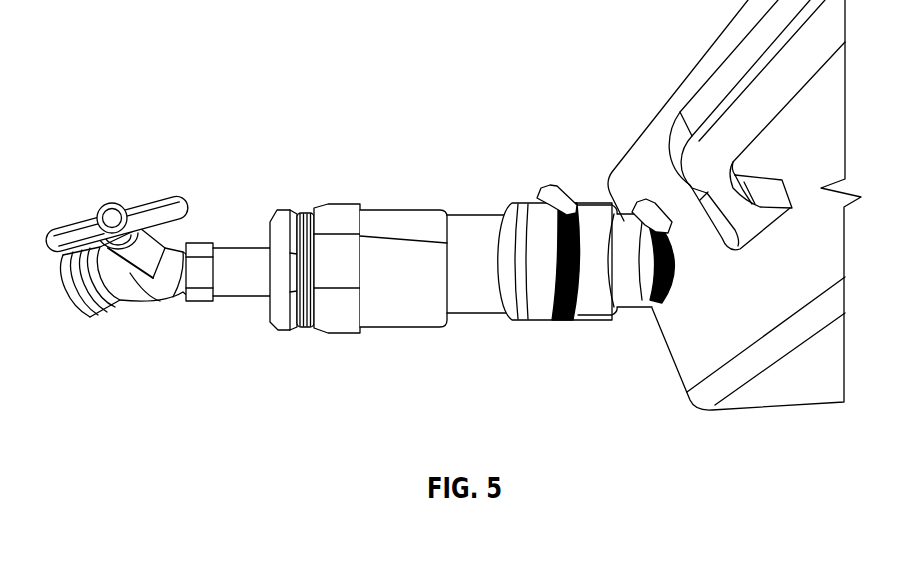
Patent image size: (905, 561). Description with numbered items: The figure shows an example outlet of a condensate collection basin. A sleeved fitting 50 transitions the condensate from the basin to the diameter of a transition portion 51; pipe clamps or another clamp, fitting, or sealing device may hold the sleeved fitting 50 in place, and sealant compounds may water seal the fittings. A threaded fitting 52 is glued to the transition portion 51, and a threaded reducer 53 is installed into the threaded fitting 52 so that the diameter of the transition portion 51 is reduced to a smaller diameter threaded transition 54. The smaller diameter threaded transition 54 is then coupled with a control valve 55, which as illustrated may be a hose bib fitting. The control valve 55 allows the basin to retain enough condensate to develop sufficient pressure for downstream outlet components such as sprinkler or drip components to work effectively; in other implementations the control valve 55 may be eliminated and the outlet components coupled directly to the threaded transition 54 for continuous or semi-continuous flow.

The sleeved fitting 50 is at (580, 317).
The transition portion 51 is at (476, 320).
The threaded fitting 52 is at (398, 328).
The threaded reducer 53 is at (290, 331).
The smaller diameter threaded transition 54 is at (250, 248).
The control valve 55 is at (108, 207).